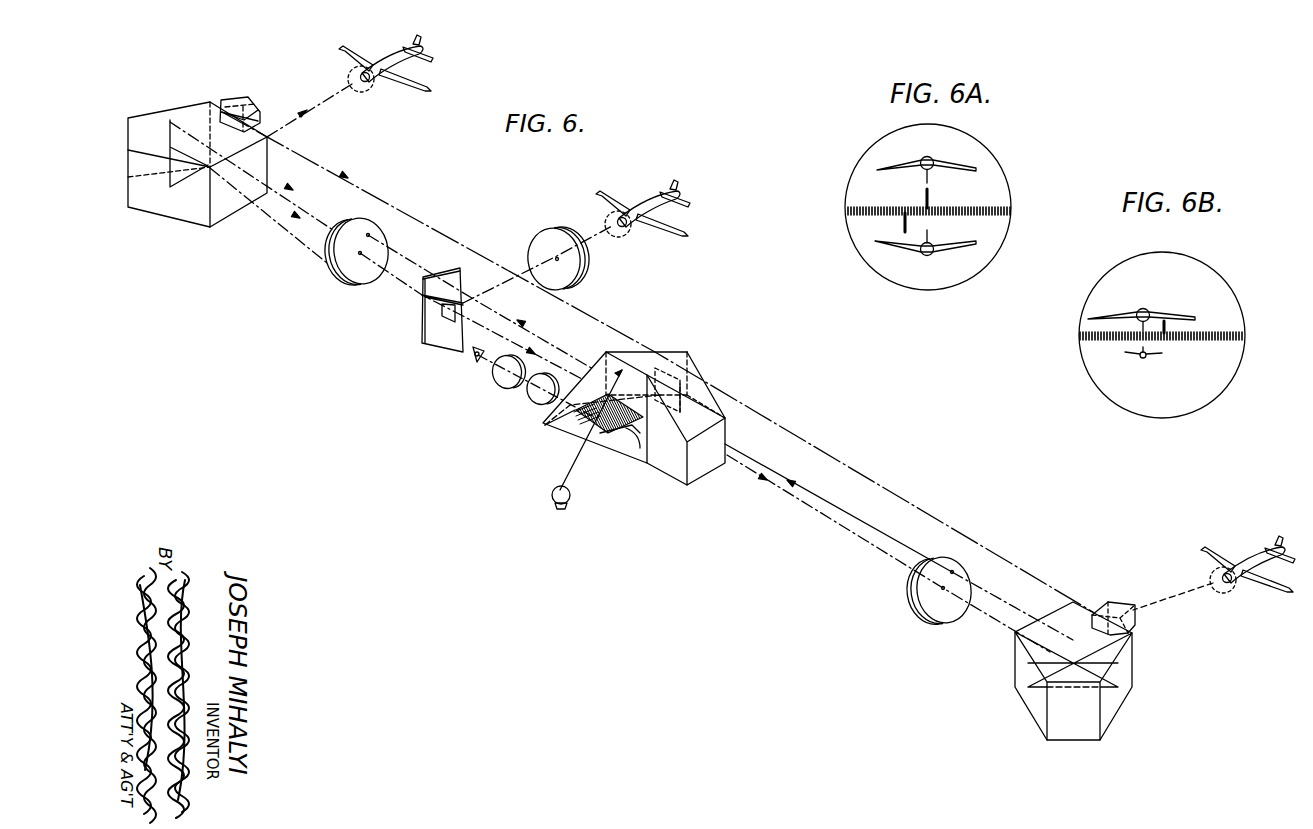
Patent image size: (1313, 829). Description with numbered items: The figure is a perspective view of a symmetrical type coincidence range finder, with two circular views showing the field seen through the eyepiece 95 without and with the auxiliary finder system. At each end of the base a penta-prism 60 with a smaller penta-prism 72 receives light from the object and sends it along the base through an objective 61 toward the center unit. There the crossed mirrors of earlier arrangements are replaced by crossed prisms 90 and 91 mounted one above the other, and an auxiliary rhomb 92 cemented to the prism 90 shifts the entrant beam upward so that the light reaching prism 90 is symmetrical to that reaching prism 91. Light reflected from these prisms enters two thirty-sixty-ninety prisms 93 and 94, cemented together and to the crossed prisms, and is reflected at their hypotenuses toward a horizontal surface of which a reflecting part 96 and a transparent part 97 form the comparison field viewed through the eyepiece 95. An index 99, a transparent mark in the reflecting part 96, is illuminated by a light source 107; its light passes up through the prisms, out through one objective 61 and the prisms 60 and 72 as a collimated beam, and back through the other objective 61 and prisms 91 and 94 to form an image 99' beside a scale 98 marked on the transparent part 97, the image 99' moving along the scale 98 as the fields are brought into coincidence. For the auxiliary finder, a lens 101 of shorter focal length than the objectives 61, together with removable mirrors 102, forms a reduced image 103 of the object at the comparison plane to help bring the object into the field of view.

In FIG. 6, the penta-prism 60 is at (190, 212).
In FIG. 6, the objective 61 is at (343, 268).
In FIG. 6, the penta-prism 72 is at (237, 98).
In FIG. 6, the crossed prism 90 is at (638, 417).
In FIG. 6, the crossed prism 91 is at (650, 450).
In FIG. 6, the auxiliary rhomb 92 is at (697, 388).
In FIG. 6, the 30—60—90 prism 93 is at (603, 364).
In FIG. 6, the 30—60—90 prism 94 is at (627, 460).
In FIG. 6, the eyepiece 95 is at (503, 385).
In FIG. 6, the reflecting surface part 96 is at (627, 432).
In FIG. 6, the transparent surface part 97 is at (570, 437).
In FIG. 6, the scale 98 is at (605, 437).
In FIG. 6A, the scale 98 is at (995, 214).
In FIG. 6B, the scale 98 is at (1217, 338).
In FIG. 6, the index 99 is at (535, 404).
In FIG. 6A, the index 99 is at (987, 192).
In FIG. 6B, the index 99 is at (1222, 317).
In FIG. 6A, the image of index 99' is at (854, 231).
In FIG. 6, the lens 101 is at (585, 270).
In FIG. 6, the removable mirrors 102 is at (422, 318).
In FIG. 6B, the reduced image 103 is at (1130, 353).
In FIG. 6, the light source 107 is at (552, 496).